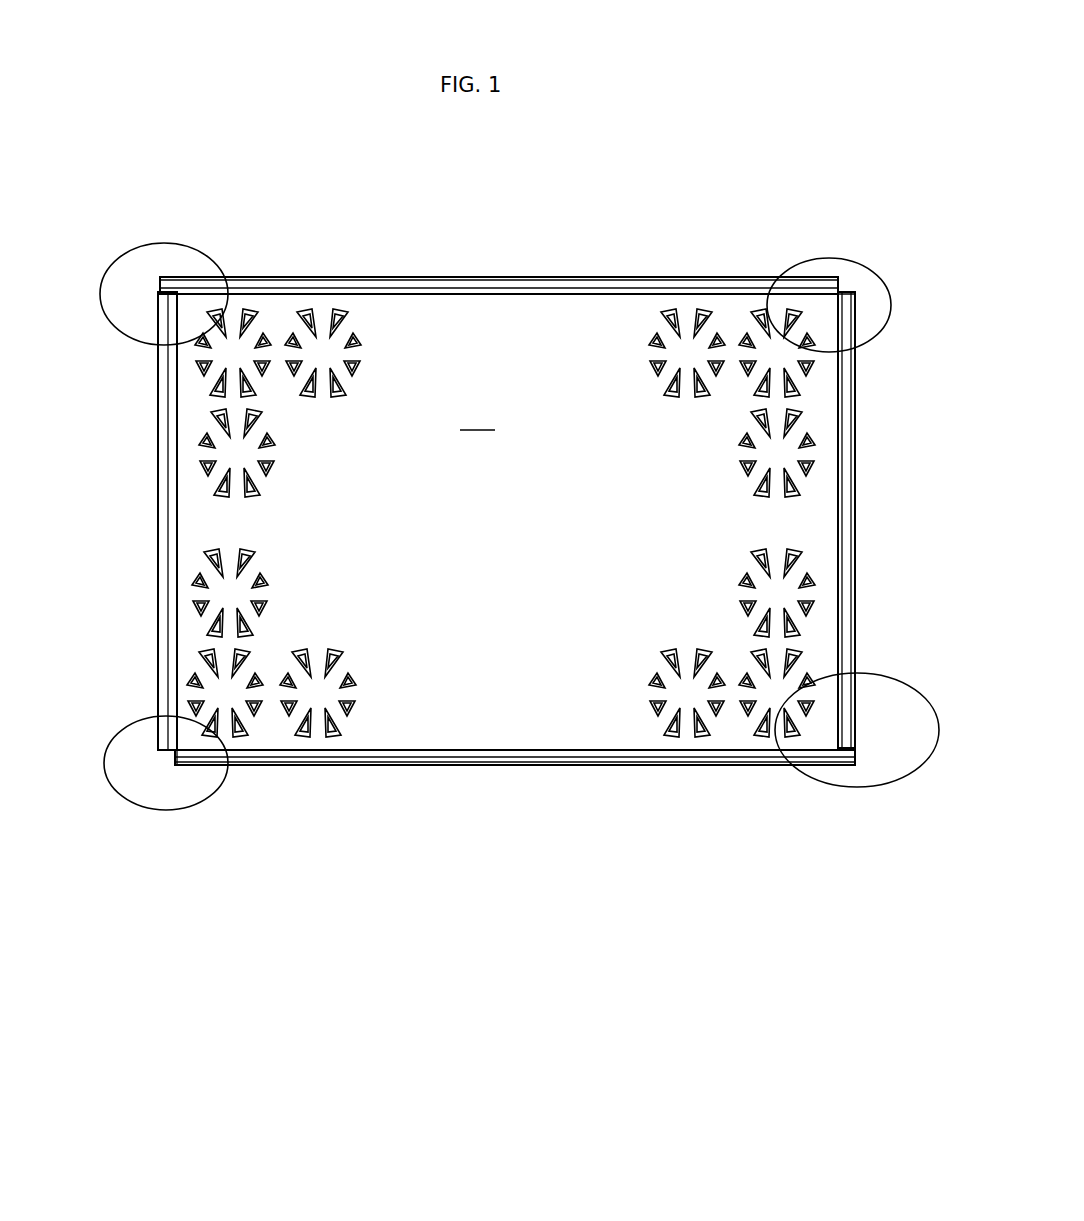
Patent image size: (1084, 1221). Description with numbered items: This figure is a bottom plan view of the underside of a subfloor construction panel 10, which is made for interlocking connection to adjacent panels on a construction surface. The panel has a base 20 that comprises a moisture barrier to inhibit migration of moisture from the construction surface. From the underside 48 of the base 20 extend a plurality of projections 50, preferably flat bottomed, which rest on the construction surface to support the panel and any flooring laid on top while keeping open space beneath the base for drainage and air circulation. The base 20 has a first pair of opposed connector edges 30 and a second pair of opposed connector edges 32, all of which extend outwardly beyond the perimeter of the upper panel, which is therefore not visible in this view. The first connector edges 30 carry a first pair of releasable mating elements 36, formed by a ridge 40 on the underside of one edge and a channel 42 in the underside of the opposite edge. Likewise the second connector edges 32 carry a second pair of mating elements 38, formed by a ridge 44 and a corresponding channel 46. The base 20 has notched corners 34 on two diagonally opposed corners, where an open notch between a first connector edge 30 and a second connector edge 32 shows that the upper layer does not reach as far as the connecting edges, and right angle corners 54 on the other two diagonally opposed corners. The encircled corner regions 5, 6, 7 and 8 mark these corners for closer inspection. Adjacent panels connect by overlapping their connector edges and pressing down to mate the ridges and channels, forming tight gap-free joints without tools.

The corner detail view circle 5 is at (153, 763).
The corner detail view circle 6 is at (149, 294).
The corner detail view circle 7 is at (864, 730).
The corner detail view circle 8 is at (843, 305).
The construction panel 10 is at (712, 858).
The base 20 is at (521, 553).
The first pair of opposed connector edges 30 is at (272, 278).
The second pair of opposed connector edges 32 is at (160, 408).
The notched corner 34 is at (850, 265).
The first pair of releasable mating elements 36 is at (565, 288).
The second pair of mating elements 38 is at (172, 541).
The ridge 40 is at (395, 292).
The channel 42 is at (388, 757).
The ridge 44 is at (165, 513).
The channel 46 is at (848, 563).
The underside of the base 48 is at (477, 411).
The projections 50 is at (193, 608).
The right angle corner 54 is at (137, 263).